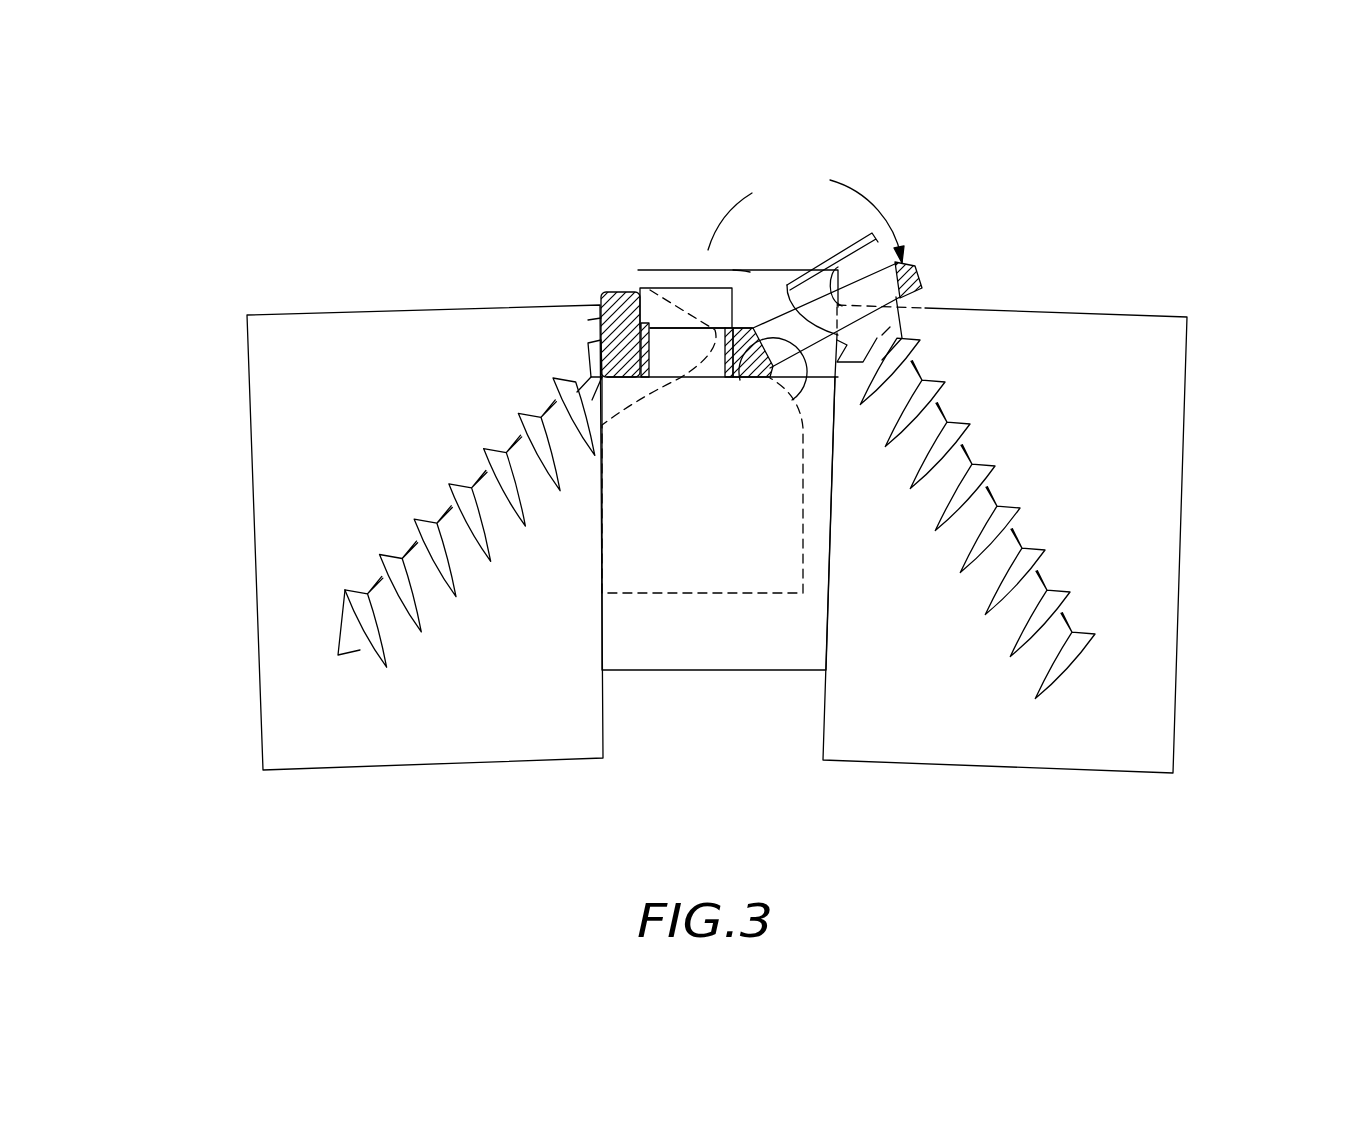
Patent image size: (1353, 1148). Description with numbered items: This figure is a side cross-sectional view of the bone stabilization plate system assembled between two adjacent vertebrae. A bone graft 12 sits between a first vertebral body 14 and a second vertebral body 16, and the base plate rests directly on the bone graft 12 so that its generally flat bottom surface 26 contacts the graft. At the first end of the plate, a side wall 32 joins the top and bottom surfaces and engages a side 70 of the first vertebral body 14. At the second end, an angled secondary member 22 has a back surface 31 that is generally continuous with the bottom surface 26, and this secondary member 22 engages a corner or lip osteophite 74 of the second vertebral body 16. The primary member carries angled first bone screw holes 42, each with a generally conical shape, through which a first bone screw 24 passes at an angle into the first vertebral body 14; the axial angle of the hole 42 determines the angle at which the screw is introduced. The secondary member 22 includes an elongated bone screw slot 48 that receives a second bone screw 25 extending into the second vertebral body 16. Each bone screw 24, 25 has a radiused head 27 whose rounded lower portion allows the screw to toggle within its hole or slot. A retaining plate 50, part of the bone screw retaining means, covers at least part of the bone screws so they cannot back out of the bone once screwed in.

The bone graft 12 is at (733, 650).
The first vertebral body 14 is at (422, 743).
The second vertebral body 16 is at (1042, 742).
The secondary member 22 is at (922, 287).
The first bone screw 24 is at (358, 630).
The second bone screw 25 is at (1073, 657).
The bottom surface 26 is at (743, 378).
The radiused head 27 is at (591, 340).
The back surface 31 is at (918, 290).
The side wall 32 is at (641, 320).
The first bone screw hole 42 is at (713, 328).
The bone screw slot 48 is at (803, 372).
The retaining plate 50 is at (722, 290).
The side 70 is at (598, 300).
The lip osteophite 74 is at (590, 323).